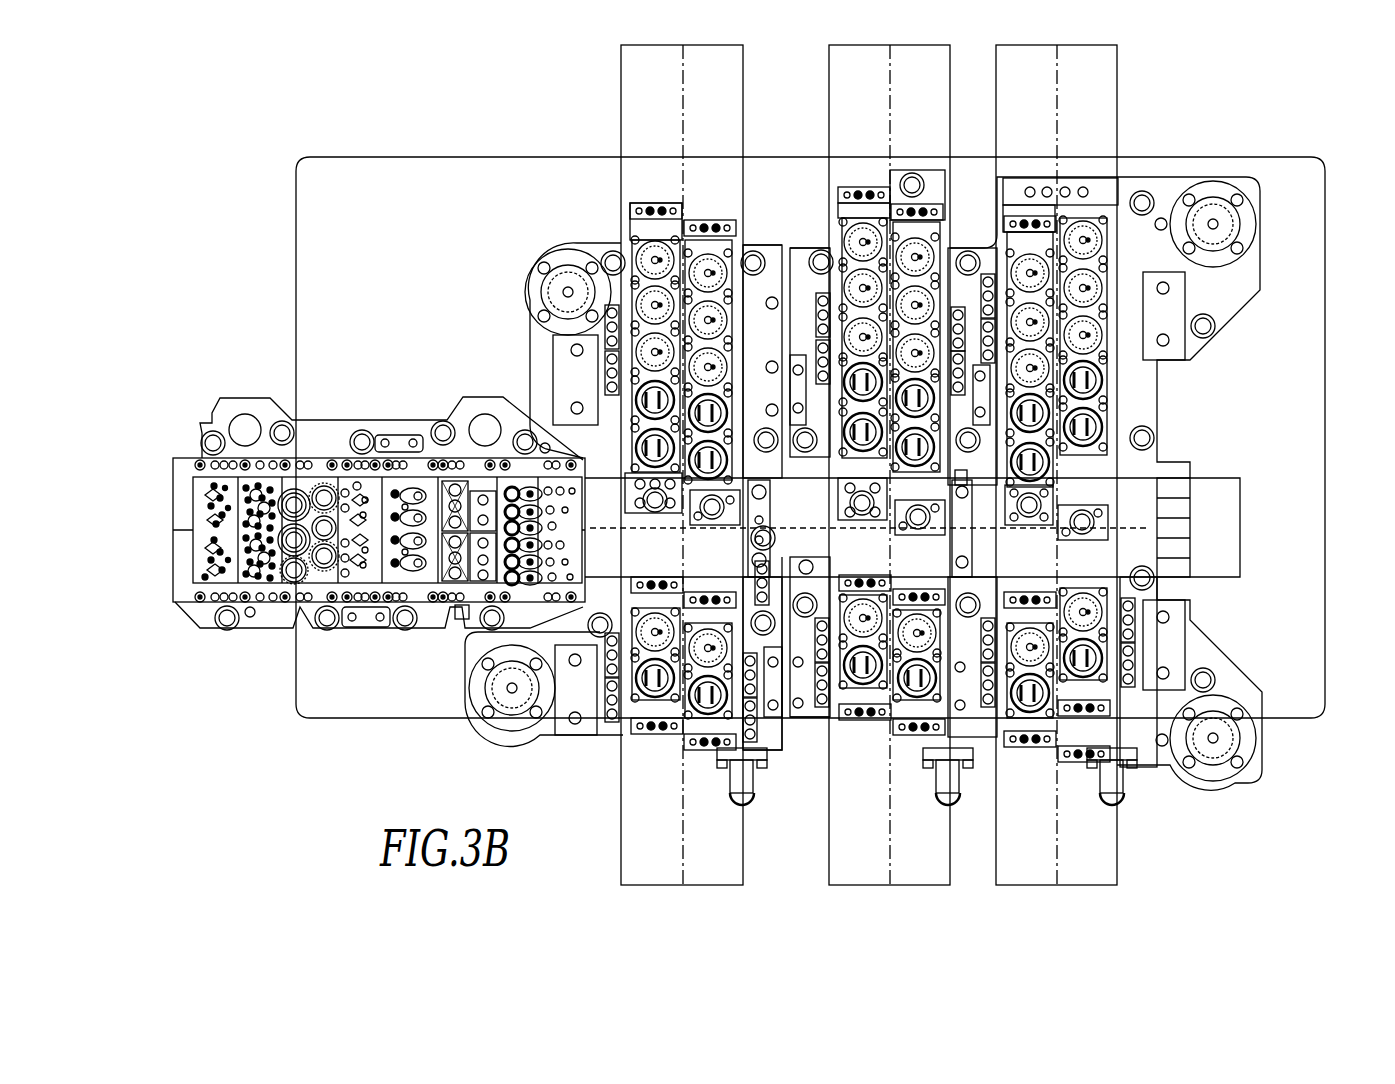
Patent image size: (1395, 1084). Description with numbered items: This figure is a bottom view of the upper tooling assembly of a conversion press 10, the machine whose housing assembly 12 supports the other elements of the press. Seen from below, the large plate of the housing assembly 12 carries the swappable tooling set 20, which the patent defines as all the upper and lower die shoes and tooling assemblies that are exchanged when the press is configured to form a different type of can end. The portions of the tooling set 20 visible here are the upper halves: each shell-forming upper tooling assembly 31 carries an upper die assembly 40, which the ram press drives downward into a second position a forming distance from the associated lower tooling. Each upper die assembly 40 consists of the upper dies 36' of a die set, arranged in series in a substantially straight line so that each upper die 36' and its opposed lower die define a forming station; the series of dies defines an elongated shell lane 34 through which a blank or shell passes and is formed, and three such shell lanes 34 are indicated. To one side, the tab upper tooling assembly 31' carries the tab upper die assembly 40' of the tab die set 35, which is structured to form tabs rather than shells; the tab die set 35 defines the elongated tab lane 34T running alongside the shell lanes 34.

The conversion press 10 is at (1260, 103).
The housing assembly 12 is at (1326, 222).
The tooling set 20 is at (1131, 144).
The upper tooling assembly 31 is at (544, 719).
The tab upper tooling assembly 31' is at (458, 608).
The shell lane 34 is at (683, 892).
The tab lane 34T is at (153, 503).
The tab die set 35 is at (153, 555).
The upper die 36' is at (1108, 287).
The upper die assembly 40 is at (624, 330).
The tab upper die assembly 40' is at (317, 470).